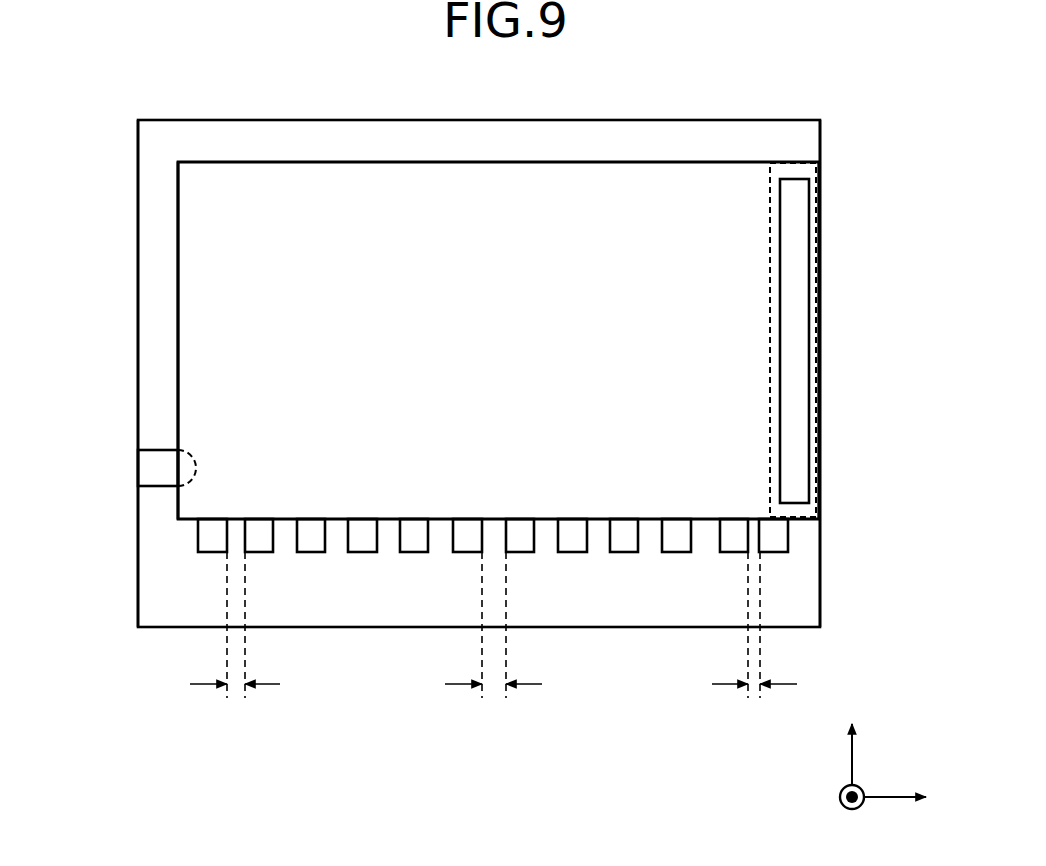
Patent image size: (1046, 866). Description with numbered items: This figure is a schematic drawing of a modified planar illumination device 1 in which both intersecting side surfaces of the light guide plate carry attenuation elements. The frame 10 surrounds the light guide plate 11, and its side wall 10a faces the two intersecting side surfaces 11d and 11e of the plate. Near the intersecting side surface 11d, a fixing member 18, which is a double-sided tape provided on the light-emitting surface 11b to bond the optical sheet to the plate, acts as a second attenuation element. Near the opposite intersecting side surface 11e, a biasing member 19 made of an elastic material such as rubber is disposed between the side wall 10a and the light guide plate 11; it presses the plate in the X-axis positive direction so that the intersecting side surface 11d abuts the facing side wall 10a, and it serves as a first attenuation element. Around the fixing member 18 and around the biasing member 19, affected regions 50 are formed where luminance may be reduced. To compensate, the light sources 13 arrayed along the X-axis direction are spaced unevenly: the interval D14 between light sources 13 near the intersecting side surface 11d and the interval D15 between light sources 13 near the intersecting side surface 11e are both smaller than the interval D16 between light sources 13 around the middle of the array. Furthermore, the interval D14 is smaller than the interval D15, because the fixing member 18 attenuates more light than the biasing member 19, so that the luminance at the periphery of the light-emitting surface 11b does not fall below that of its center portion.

The planar illumination device 1 is at (108, 124).
The frame 10 is at (138, 220).
The side wall 10a is at (138, 188).
The light guide plate 11 is at (178, 293).
The light-emitting surface 11b is at (435, 215).
The intersecting side surface 11d is at (820, 347).
The intersecting side surface 11e is at (178, 347).
The light sources 13 is at (198, 532).
The fixing member 18 is at (795, 228).
The biasing member 19 is at (156, 466).
The affected regions 50 is at (185, 470).
The interval D14 is at (754, 690).
The interval D15 is at (236, 690).
The interval D16 is at (494, 690).